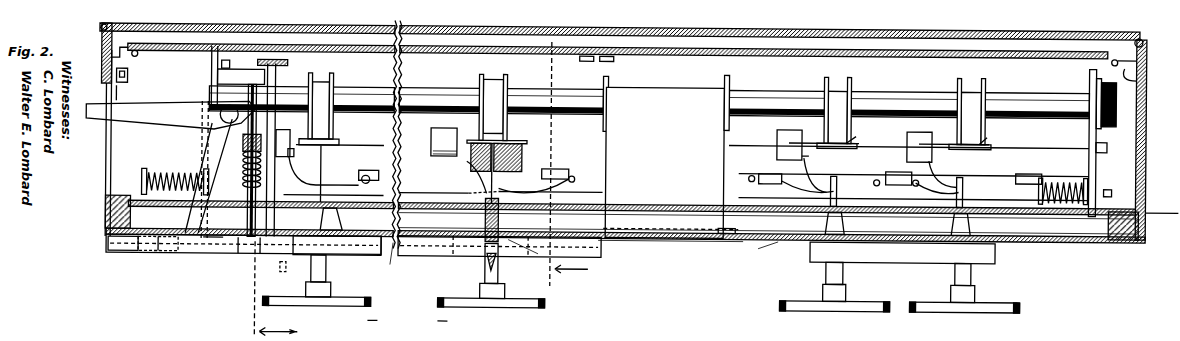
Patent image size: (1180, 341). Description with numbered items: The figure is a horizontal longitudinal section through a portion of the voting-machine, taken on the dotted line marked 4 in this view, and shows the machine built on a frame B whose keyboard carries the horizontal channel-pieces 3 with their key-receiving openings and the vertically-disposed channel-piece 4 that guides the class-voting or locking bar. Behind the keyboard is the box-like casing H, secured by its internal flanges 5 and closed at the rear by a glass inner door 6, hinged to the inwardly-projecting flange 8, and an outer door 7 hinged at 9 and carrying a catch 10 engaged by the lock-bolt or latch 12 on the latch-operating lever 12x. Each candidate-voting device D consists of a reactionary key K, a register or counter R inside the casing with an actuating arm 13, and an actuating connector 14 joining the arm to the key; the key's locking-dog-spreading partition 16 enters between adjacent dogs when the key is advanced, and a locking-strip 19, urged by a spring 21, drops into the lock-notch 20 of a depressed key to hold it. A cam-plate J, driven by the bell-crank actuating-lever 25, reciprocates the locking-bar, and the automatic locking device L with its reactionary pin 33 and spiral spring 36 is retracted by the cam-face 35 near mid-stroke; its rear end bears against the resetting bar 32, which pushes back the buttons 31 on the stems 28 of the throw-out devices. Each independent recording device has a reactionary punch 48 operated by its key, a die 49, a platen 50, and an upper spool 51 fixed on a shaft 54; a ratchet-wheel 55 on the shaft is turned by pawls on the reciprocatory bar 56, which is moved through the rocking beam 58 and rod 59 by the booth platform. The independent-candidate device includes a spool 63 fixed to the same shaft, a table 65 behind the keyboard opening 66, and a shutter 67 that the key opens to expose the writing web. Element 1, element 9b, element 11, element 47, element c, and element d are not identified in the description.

The base plate 1 is at (264, 246).
The channel-piece 3 is at (362, 251).
The vertically-disposed channel-piece 4 is at (270, 291).
The internal flanges 5 is at (108, 196).
The inner door 6 is at (790, 50).
The outer door 7 is at (716, 46).
The inwardly-projecting flange 8 is at (1138, 72).
The hinge 9 is at (1146, 38).
The slide block 9b is at (287, 237).
The catch 10 is at (112, 58).
The platform 11 is at (810, 170).
The lock-bolt or latch 12 is at (128, 75).
The latch-operating lever 12x is at (120, 88).
The actuating arm 13 is at (295, 151).
The actuating connector 14 is at (296, 160).
The locking-dog-spreading partition 16 is at (487, 258).
The locking-strip 19 is at (425, 180).
The lock-notch 20 is at (858, 186).
The spring 21 is at (176, 171).
The actuating-lever 25 is at (142, 118).
The shank or stem 28 is at (268, 98).
The button 31 is at (258, 62).
The resetting bar 32 is at (228, 74).
The reactionary pin 33 is at (163, 252).
The pin-retracting cam-face 35 is at (215, 216).
The spiral spring 36 is at (243, 172).
The block 47 is at (135, 243).
The reactionary punch 48 is at (965, 162).
The punch support or die 49 is at (728, 152).
The platen 50 is at (505, 137).
The upper spool 51 is at (652, 109).
The spool-supporting shaft 54 is at (757, 93).
The ratchet-wheel 55 is at (1117, 100).
The reciprocatory actuating-bar 56 is at (1090, 128).
The rocking beam or lever 58 is at (1102, 145).
The rod 59 is at (1110, 186).
The spool 63 is at (595, 100).
The platen or table 65 is at (738, 226).
The transverse opening 66 is at (668, 236).
The shutter 67 is at (660, 226).
The frame B is at (107, 216).
The casing H is at (107, 146).
The cam-plate J is at (150, 242).
The locking device L is at (245, 215).
The key K is at (338, 302).
The candidate-voting device D is at (405, 319).
The register or counter R is at (290, 125).
The pin c is at (243, 240).
The joint d is at (495, 260).